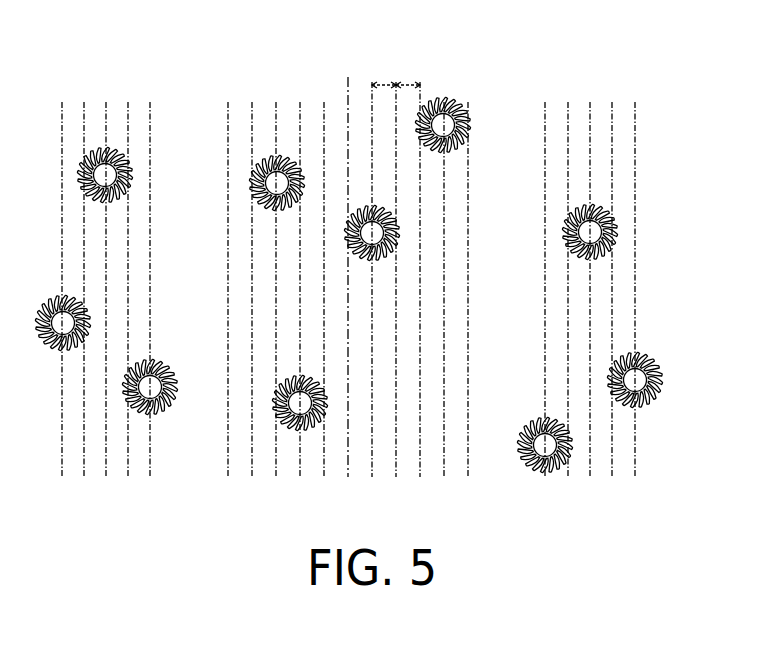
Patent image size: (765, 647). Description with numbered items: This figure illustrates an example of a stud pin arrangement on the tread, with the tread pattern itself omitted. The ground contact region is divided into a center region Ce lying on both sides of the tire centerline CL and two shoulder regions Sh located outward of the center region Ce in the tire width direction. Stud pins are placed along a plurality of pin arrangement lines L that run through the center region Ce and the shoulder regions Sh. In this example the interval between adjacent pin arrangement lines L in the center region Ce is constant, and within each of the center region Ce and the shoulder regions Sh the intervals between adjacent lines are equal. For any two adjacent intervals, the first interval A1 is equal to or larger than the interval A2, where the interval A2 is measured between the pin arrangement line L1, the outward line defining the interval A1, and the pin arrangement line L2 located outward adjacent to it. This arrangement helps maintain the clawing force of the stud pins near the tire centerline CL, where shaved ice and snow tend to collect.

The shoulder region Sh is at (33, 53).
The center region Ce is at (187, 53).
The tire centerline CL is at (346, 266).
The first interval A1 is at (384, 75).
The second interval A2 is at (408, 75).
The pin arrangement line L1 is at (374, 291).
The pin arrangement line L2 is at (398, 291).
The pin arrangement line L is at (150, 455).